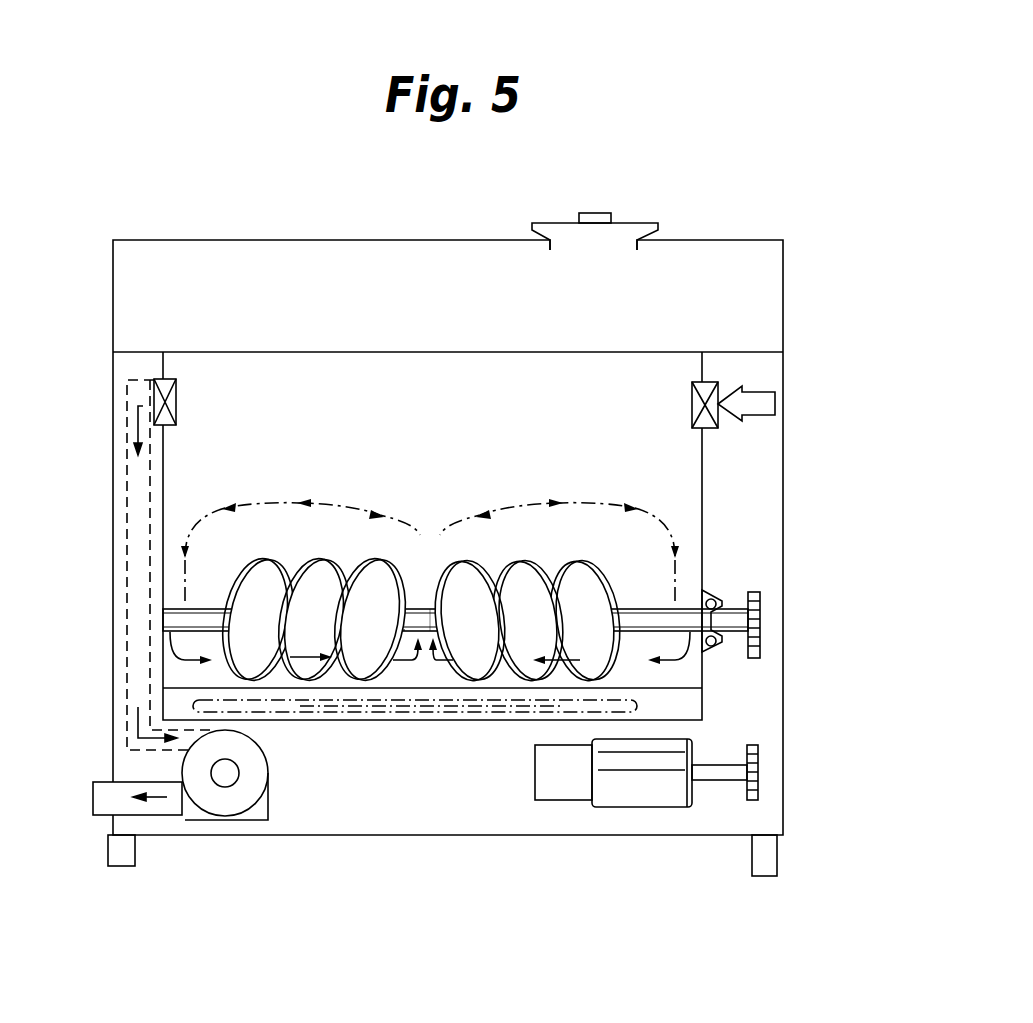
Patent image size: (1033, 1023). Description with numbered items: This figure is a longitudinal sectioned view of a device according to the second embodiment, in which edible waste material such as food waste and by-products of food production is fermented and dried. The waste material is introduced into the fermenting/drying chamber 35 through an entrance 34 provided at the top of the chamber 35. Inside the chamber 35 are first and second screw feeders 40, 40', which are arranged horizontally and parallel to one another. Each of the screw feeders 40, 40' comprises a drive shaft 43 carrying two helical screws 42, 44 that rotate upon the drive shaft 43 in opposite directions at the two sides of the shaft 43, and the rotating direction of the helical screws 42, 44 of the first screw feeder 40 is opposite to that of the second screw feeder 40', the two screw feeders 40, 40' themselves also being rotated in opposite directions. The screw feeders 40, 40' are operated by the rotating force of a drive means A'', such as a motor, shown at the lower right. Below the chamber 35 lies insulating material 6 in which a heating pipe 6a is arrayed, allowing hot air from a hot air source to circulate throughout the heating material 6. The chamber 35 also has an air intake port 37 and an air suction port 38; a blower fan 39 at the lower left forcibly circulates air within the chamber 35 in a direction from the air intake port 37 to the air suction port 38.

The entrance 34 is at (637, 222).
The fermenting/drying chamber 35 is at (360, 398).
The air intake port 37 is at (719, 383).
The air suction port 38 is at (154, 383).
The blower fan 39 is at (230, 800).
The first screw feeder 40 is at (420, 681).
The second screw feeder 40' is at (439, 694).
The helical screw 42 is at (326, 680).
The drive shaft 43 is at (381, 640).
The helical screw 44 is at (530, 678).
The insulating material 6 is at (543, 720).
The heating pipe 6a is at (578, 720).
The drive means A'' is at (646, 824).